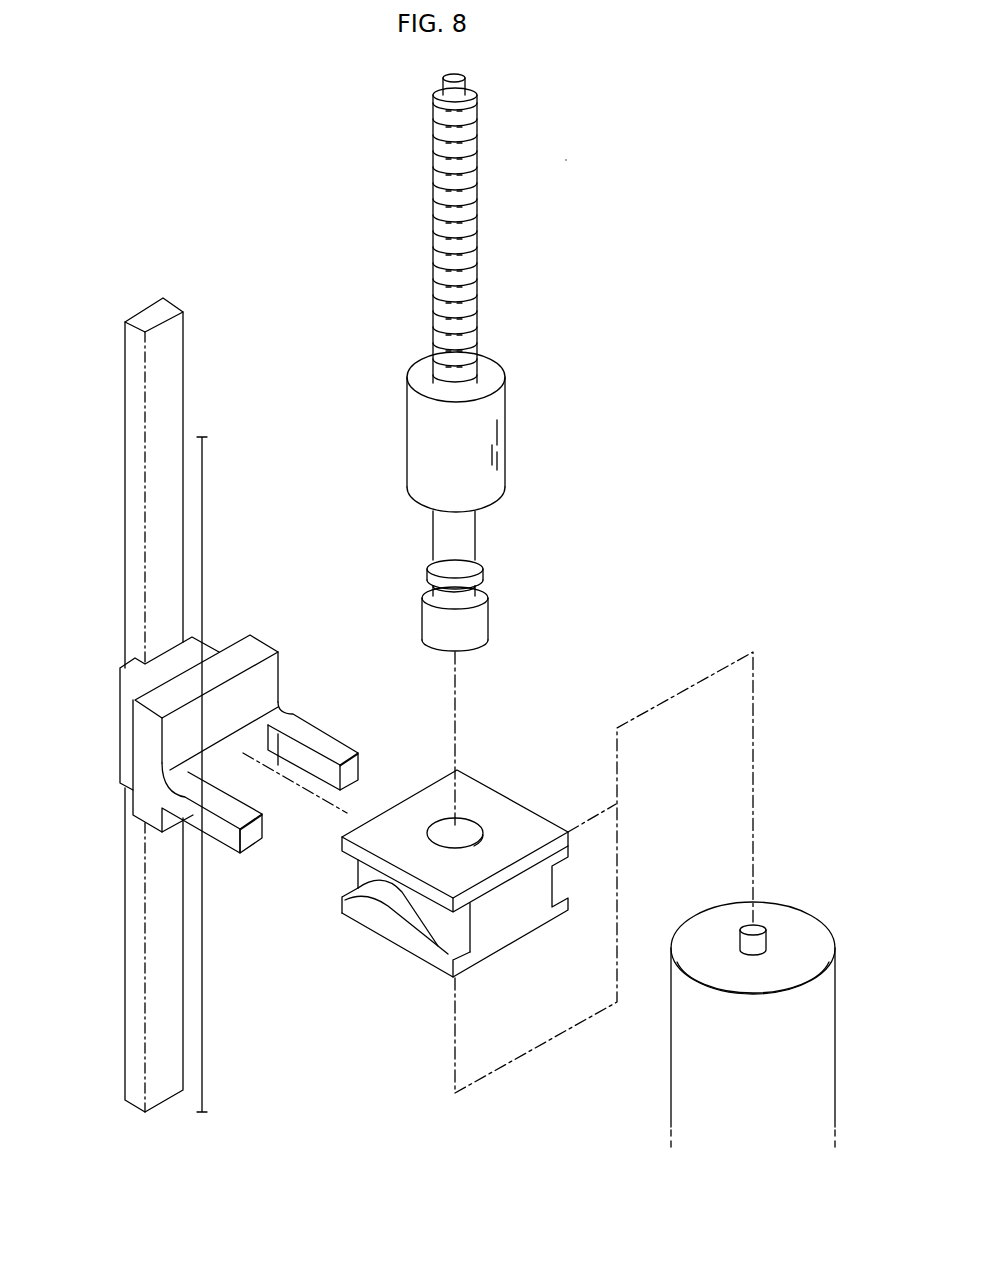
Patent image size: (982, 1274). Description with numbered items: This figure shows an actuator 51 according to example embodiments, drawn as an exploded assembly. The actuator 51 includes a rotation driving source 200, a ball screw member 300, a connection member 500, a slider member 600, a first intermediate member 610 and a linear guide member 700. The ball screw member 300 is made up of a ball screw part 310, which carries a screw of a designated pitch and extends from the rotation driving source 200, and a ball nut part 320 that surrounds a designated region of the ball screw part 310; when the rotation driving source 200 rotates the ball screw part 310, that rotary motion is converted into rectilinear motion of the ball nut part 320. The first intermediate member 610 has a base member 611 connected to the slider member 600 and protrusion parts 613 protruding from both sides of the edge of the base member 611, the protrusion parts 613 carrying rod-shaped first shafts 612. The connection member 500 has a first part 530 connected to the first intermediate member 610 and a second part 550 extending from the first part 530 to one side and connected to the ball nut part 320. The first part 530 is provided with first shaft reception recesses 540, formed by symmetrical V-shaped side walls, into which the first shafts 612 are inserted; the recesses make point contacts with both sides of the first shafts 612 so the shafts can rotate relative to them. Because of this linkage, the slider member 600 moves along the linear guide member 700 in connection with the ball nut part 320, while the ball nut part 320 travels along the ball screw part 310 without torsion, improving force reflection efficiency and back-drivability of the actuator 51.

The actuator 51 is at (576, 154).
The rotation driving source 200 is at (672, 1052).
The ball screw member 300 is at (536, 389).
The ball screw part 310 is at (476, 259).
The ball nut part 320 is at (492, 364).
The connection member 500 is at (510, 932).
The first part 530 is at (572, 882).
The first shaft reception recesses 540 is at (572, 896).
The second part 550 is at (462, 822).
The slider member 600 is at (120, 738).
The first intermediate member 610 is at (228, 840).
The base member 611 is at (262, 640).
The first shafts 612 is at (312, 722).
The protrusion parts 613 is at (366, 766).
The linear guide member 700 is at (133, 505).